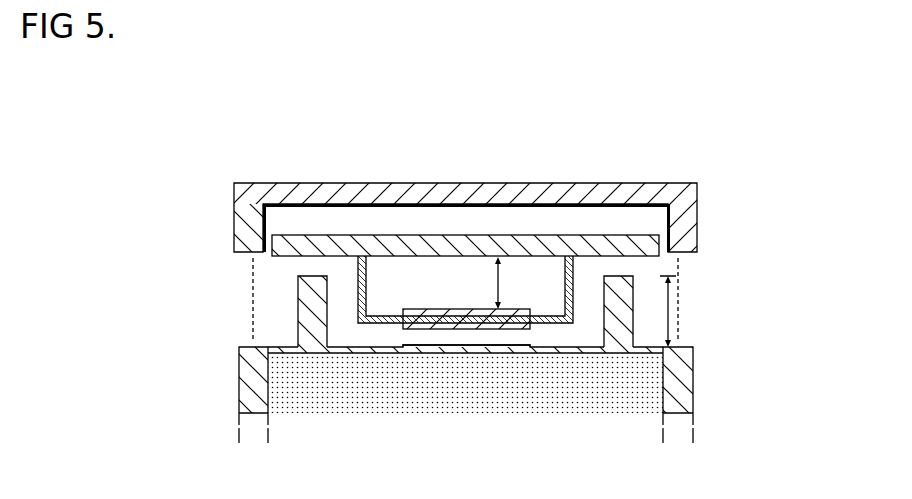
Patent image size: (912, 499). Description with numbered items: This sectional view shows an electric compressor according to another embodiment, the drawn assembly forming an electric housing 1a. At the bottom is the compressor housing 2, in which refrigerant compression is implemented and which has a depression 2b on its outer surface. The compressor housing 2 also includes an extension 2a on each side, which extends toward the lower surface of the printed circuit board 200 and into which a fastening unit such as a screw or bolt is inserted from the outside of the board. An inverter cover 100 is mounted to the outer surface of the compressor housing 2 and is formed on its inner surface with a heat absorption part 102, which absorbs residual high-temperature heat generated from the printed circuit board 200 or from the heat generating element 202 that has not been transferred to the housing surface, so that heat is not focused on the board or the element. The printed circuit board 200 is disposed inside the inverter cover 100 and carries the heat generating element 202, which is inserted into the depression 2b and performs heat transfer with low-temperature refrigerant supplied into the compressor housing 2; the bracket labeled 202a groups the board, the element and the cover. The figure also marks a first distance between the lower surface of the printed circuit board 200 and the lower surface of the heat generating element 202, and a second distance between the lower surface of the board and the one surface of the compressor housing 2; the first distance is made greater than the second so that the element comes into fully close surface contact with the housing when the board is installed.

The electric housing 1a is at (244, 99).
The inverter cover 100 is at (470, 183).
The heat absorption part 102 is at (671, 219).
The printed circuit board 200 is at (363, 234).
The heat generating element 202 is at (455, 309).
The sensor module 202a is at (470, 112).
The compressor housing 2 is at (698, 378).
The extension 2a is at (292, 313).
The depression 2b is at (470, 344).